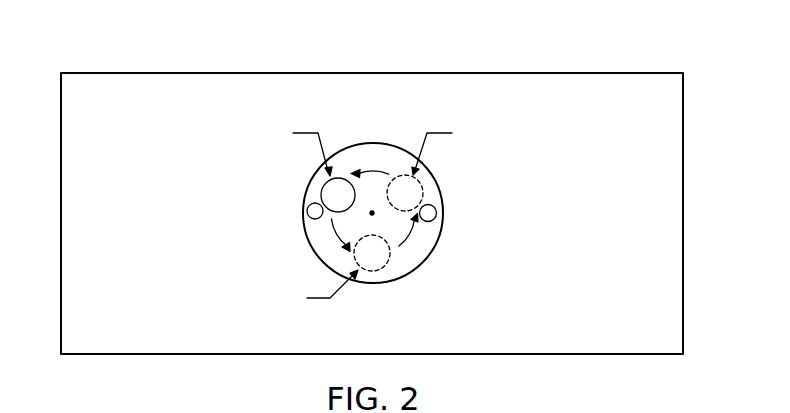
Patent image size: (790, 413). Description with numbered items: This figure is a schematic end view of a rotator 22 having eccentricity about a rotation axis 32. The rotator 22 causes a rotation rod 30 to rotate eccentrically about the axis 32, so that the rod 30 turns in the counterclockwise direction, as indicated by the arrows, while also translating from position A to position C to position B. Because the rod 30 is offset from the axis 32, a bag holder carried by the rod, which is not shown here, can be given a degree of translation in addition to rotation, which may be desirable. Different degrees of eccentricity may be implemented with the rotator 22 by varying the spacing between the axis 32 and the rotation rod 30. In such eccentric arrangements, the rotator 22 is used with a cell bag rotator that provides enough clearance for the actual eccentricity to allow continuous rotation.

The rotator 22 is at (555, 72).
The rotation rod 30 is at (320, 190).
The rotation axis 32 is at (370, 220).